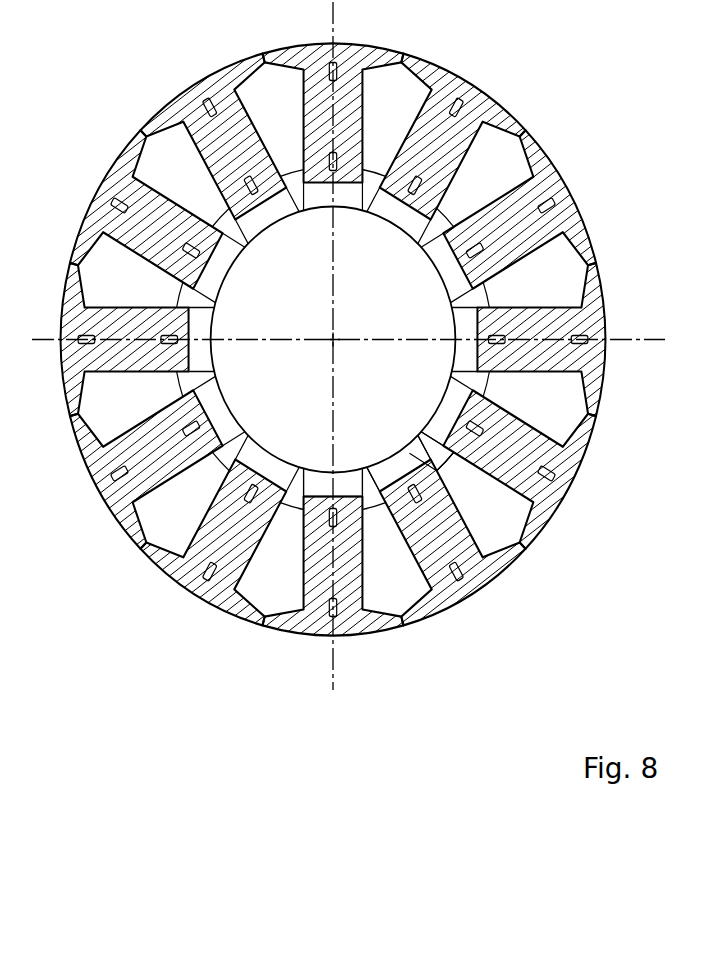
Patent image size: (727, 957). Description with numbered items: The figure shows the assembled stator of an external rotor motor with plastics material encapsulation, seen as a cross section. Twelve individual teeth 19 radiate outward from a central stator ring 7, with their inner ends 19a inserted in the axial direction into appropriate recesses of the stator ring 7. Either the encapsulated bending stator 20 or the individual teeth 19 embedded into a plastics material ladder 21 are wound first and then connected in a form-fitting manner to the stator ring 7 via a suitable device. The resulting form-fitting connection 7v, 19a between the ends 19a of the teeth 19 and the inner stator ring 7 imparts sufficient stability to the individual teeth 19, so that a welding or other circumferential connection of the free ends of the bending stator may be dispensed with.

The teeth 19 is at (183, 548).
The ends of the teeth 19a is at (446, 558).
The encapsulated bending stator 20 is at (203, 582).
The plastics material ladder 21 is at (203, 582).
The stator ring 7 is at (367, 490).
The form-fitting connection 7v is at (443, 447).